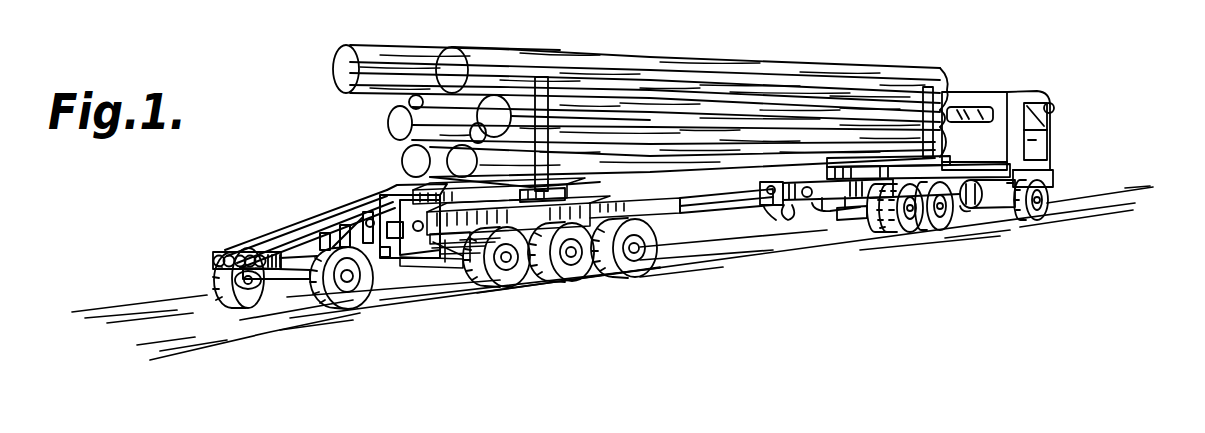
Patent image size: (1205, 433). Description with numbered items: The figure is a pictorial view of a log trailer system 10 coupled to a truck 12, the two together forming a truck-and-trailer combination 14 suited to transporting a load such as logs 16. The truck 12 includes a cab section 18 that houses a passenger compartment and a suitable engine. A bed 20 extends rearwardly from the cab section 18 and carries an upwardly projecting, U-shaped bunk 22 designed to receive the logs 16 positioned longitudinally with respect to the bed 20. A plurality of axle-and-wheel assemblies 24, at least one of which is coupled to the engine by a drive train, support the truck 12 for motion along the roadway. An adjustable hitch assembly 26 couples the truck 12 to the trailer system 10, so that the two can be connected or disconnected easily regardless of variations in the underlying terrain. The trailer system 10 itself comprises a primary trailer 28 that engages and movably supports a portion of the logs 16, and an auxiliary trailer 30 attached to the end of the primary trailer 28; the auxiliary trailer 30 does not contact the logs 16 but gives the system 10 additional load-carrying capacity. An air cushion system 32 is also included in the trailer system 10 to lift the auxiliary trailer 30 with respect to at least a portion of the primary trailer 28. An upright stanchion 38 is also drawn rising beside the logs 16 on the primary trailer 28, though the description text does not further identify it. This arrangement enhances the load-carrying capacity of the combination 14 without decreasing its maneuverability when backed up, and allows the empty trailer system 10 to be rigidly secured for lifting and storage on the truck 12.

The trailer system 10 is at (330, 265).
The truck 12 is at (998, 166).
The truck-and-trailer combination 14 is at (840, 270).
The logs 16 is at (730, 63).
The cab section 18 is at (1053, 143).
The bed 20 is at (833, 193).
The U-shaped bunk 22 is at (940, 83).
The axle-and-wheel assemblies 24 is at (920, 235).
The adjustable hitch assembly 26 is at (783, 200).
The primary trailer 28 is at (440, 230).
The auxiliary trailer 30 is at (273, 265).
The air cushion system 32 is at (452, 260).
The stanchion 38 is at (546, 117).